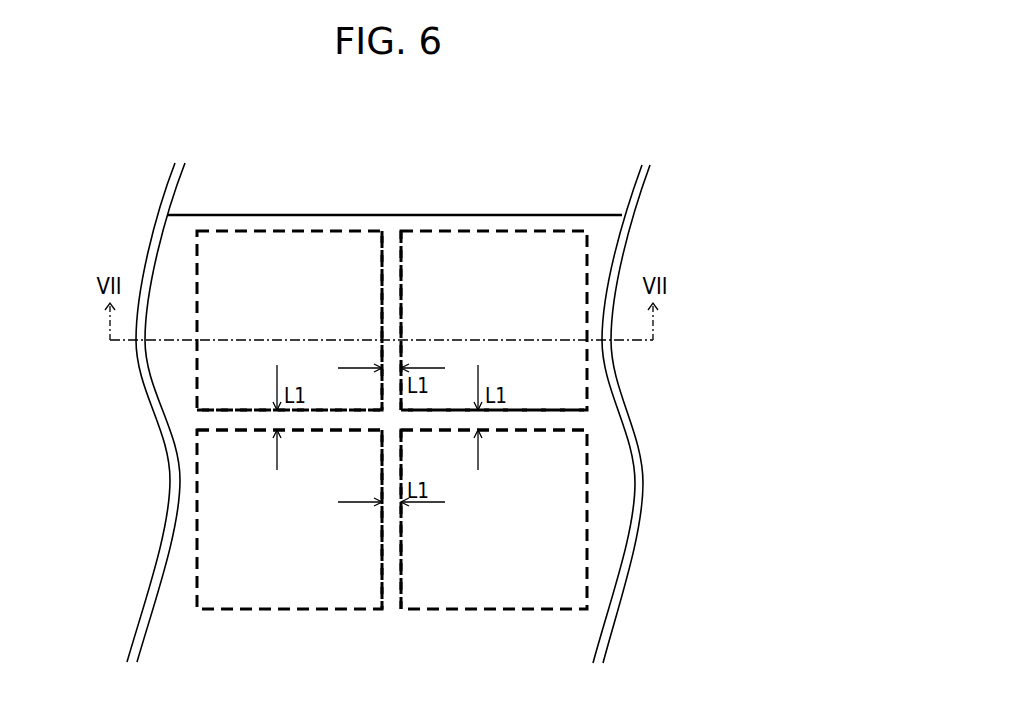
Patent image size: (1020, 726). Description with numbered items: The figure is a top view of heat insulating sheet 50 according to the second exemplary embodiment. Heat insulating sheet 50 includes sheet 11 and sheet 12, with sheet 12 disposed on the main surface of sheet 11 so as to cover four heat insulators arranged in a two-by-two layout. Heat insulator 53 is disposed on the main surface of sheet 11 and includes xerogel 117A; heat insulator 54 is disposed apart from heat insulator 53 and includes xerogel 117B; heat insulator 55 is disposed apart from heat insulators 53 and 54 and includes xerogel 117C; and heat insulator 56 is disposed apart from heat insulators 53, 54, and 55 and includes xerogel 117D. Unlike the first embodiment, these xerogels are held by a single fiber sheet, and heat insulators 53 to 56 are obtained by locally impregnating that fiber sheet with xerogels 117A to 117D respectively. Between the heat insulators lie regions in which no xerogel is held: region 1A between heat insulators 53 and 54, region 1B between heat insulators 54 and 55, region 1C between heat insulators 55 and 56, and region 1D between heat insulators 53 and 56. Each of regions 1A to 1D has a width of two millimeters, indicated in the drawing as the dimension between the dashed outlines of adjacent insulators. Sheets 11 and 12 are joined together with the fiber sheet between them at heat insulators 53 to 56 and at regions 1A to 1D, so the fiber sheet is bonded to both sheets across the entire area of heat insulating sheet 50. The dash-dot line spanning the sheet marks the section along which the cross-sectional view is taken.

The heat insulating sheet 50 is at (601, 161).
The heat insulator 53 is at (238, 250).
The heat insulator 54 is at (433, 252).
The heat insulator 55 is at (444, 573).
The heat insulator 56 is at (237, 573).
The xerogel 117A is at (337, 262).
The xerogel 117B is at (532, 263).
The xerogel 117C is at (543, 588).
The xerogel 117D is at (337, 587).
The region 1A is at (388, 240).
The region 1B is at (578, 420).
The region 1C is at (391, 595).
The region 1D is at (203, 422).
The sheet 11 is at (415, 421).
The sheet 12 is at (592, 615).